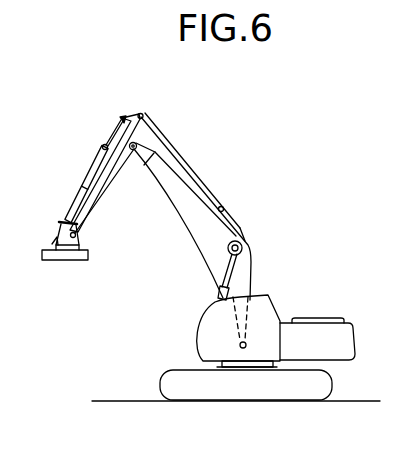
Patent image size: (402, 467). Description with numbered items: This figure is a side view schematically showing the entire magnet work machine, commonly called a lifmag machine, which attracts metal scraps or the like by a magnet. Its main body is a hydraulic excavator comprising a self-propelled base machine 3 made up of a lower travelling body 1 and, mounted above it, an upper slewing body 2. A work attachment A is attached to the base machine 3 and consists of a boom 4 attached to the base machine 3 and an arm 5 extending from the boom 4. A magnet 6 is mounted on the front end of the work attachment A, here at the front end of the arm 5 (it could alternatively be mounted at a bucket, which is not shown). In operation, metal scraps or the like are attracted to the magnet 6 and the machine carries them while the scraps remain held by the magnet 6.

The lower travelling body 1 is at (247, 402).
The upper slewing body 2 is at (267, 297).
The self-propelled base machine 3 is at (290, 312).
The boom 4 is at (250, 245).
The arm 5 is at (103, 170).
The magnet 6 is at (61, 262).
The work attachment A is at (186, 145).